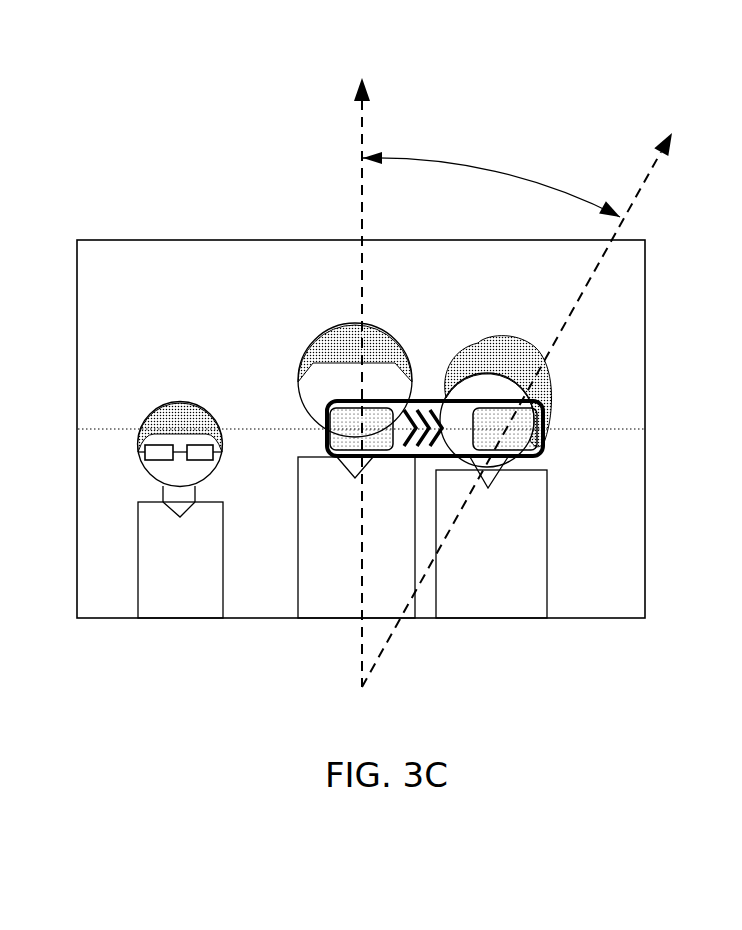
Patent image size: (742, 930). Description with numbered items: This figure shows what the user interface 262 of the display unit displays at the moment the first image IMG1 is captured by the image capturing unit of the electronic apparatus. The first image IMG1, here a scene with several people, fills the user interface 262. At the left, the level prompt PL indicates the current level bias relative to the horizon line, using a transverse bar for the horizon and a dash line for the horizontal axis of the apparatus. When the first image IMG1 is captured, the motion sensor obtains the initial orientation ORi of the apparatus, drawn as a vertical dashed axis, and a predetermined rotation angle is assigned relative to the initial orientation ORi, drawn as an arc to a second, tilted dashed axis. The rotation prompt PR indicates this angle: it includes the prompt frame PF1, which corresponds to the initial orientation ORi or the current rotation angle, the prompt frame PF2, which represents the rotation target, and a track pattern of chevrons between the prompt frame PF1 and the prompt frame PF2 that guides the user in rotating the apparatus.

The user interface 262 is at (227, 238).
The first image IMG1 is at (361, 441).
The level prompt PL is at (102, 430).
The rotation prompt PR is at (435, 466).
The prompt frame PF1 is at (361, 429).
The prompt frame PF2 is at (505, 429).
The initial orientation ORi is at (362, 366).